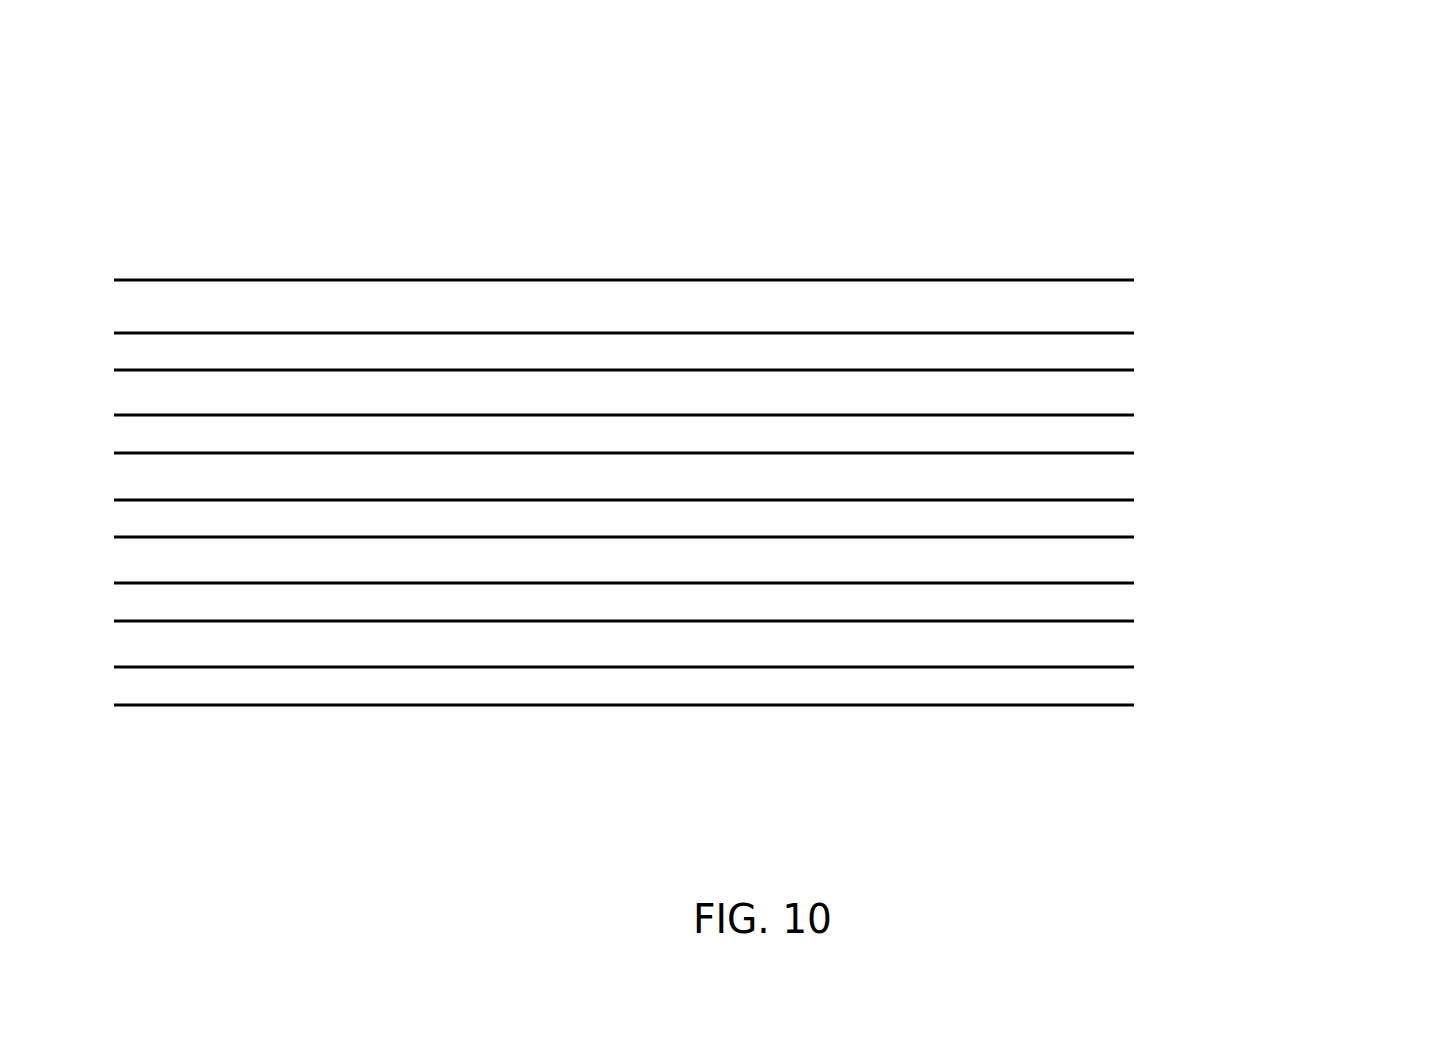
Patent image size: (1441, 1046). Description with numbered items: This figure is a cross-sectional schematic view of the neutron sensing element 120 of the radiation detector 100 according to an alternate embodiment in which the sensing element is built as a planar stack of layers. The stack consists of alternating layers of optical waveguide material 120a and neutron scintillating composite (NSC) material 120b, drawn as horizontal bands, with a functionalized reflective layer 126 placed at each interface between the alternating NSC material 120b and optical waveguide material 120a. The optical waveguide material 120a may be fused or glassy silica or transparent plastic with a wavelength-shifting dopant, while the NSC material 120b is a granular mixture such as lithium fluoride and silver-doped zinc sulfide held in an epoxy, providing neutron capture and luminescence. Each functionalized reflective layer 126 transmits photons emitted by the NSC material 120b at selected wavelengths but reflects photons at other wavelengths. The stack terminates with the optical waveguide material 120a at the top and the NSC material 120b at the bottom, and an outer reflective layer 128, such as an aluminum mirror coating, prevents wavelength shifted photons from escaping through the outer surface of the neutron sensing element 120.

The radiation detector 100 is at (1322, 95).
The neutron sensing element 120 is at (1180, 284).
The optical waveguide material 120a is at (1017, 390).
The neutron scintillating composite material 120b is at (188, 430).
The functionalized reflective layer 126 is at (295, 370).
The outer reflective layer 128 is at (785, 278).